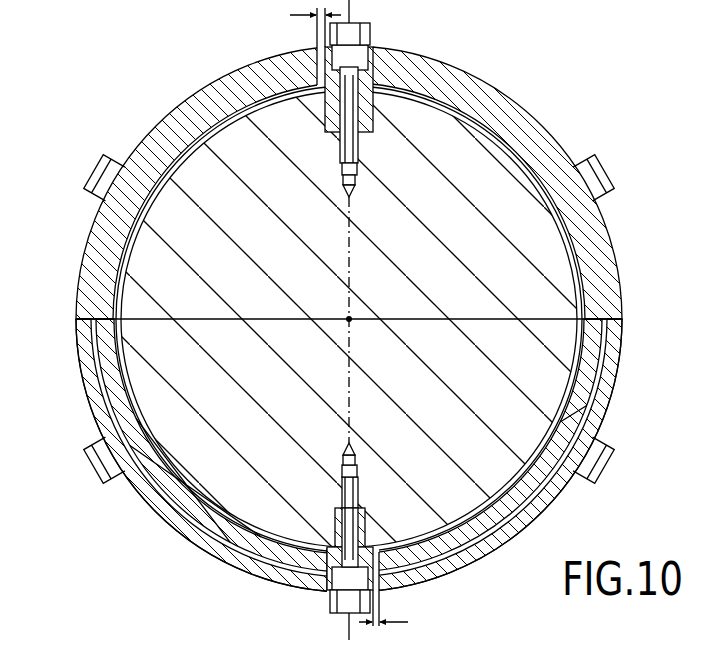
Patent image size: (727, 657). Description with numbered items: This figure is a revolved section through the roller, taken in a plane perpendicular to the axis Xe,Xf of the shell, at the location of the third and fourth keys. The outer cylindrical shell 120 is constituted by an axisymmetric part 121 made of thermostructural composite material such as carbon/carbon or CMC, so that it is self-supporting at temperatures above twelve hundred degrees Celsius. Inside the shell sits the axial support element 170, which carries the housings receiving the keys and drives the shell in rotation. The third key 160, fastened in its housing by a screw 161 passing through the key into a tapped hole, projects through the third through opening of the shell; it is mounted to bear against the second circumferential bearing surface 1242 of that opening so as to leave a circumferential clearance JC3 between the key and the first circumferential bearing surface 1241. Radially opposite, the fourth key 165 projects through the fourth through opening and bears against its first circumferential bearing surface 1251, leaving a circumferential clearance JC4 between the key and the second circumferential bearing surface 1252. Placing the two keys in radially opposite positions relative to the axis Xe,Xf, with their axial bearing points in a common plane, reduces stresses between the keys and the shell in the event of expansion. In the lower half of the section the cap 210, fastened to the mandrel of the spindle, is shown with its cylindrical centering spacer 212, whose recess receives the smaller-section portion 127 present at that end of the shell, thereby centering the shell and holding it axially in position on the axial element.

The cylindrical shell 120 is at (148, 124).
The axisymmetric part 121 is at (92, 256).
The smaller-section portion 127 is at (594, 347).
The centering spacer 212 is at (612, 381).
The cap 210 is at (377, 455).
The axial support element 170 is at (406, 294).
The third key 160 is at (331, 109).
The screw 161 is at (362, 141).
The fourth key 165 is at (373, 548).
The first circumferential bearing surface 1241 is at (320, 50).
The second circumferential bearing surface 1242 is at (371, 45).
The first circumferential bearing surface 1251 is at (330, 597).
The second circumferential bearing surface 1252 is at (377, 592).
The circumferential clearance JC3 is at (300, 26).
The circumferential clearance JC4 is at (400, 595).
The axis of the shell Xe,Xf is at (349, 319).